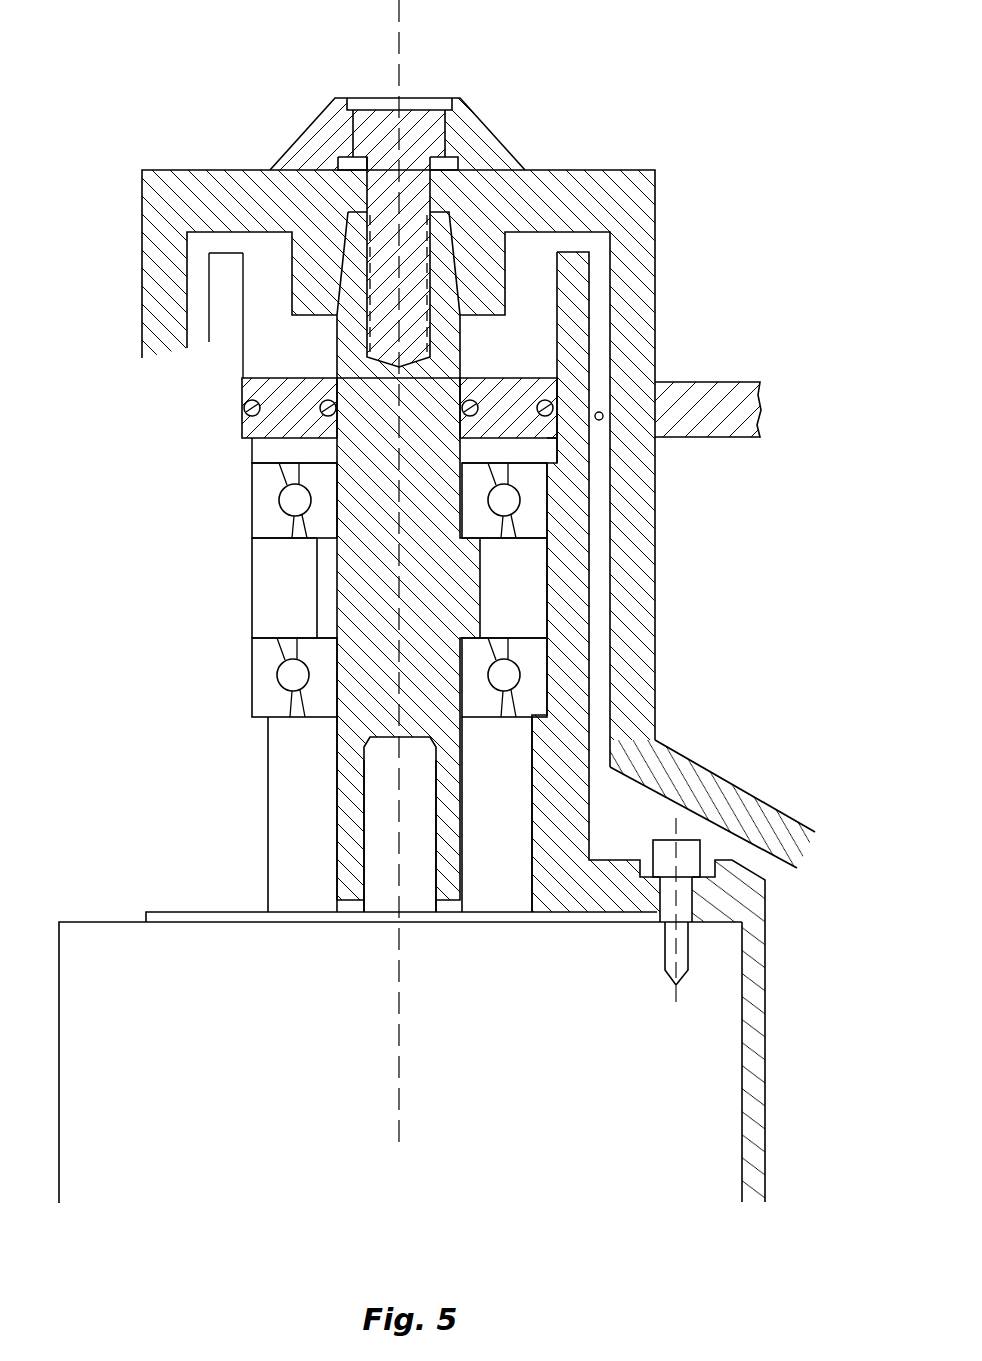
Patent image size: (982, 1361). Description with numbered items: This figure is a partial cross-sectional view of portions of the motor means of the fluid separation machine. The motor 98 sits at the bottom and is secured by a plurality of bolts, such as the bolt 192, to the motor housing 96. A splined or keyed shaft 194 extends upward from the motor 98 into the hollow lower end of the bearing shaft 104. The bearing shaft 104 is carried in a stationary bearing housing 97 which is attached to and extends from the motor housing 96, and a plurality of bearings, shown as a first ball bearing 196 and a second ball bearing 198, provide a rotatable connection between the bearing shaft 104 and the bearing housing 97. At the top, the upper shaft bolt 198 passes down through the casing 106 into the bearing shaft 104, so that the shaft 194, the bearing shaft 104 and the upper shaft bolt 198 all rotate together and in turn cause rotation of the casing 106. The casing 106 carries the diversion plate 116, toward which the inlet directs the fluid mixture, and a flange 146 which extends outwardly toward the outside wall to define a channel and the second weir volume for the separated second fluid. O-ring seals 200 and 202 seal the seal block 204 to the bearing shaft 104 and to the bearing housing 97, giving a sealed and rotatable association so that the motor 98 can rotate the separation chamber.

The motor housing 96 is at (765, 1003).
The bearing housing 97 is at (572, 732).
The motor 98 is at (505, 1071).
The bearing shaft 104 is at (420, 581).
The casing 106 is at (655, 583).
The diversion plate 116 is at (502, 140).
The flange 146 is at (712, 437).
The bolt 192 is at (692, 893).
The splined or keyed shaft 194 is at (382, 887).
The first ball bearing 196 is at (268, 680).
The second ball bearing / upper shaft bolt 198 is at (418, 138).
The O-ring seal 200 is at (477, 393).
The O-ring seal 202 is at (557, 407).
The seal block 204 is at (467, 413).